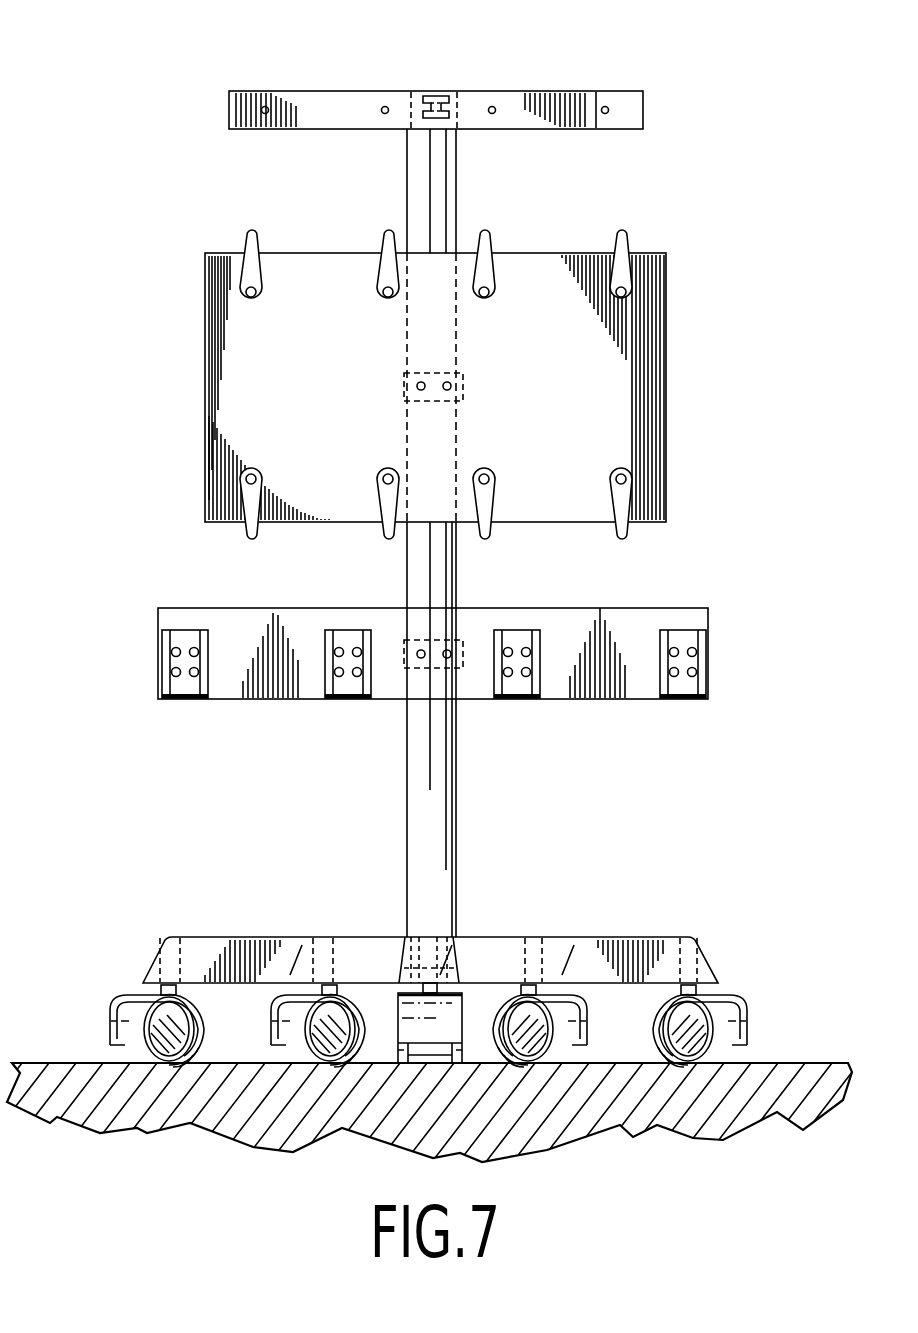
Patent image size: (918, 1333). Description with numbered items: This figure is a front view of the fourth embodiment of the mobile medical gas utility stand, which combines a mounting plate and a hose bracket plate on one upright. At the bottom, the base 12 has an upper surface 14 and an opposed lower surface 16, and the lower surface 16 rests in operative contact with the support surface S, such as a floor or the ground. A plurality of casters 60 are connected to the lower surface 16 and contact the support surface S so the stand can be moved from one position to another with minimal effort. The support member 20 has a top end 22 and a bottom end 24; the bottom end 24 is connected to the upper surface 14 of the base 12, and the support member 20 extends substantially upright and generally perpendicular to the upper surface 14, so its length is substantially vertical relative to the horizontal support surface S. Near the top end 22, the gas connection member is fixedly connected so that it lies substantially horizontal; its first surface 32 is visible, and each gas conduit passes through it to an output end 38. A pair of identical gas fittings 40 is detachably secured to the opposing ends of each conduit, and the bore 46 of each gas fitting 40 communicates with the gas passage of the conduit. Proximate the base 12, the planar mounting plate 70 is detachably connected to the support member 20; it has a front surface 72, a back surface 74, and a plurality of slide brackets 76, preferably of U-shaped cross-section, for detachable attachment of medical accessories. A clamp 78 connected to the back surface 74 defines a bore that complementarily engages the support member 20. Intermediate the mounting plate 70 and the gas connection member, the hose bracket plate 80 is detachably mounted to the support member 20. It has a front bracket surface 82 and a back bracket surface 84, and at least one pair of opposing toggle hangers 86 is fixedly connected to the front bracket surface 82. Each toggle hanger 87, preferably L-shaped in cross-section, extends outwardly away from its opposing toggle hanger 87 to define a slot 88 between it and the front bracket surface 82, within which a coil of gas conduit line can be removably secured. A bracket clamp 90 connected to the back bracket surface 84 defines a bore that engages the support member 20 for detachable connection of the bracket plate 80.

The base 12 is at (706, 938).
The upper surface 14 is at (608, 937).
The lower surface 16 is at (620, 984).
The support member 20 is at (458, 794).
The top end 22 is at (458, 131).
The bottom end 24 is at (457, 937).
The first surface 32 is at (229, 109).
The output end 38 is at (264, 107).
The gas fitting 40 is at (262, 110).
The bore 46 is at (267, 108).
The caster 60 is at (740, 1006).
The mounting plate 70 is at (710, 630).
The front surface 72 is at (280, 700).
The back surface 74 is at (160, 608).
The slide bracket 76 is at (180, 690).
The clamp 78 is at (462, 670).
The hose bracket plate 80 is at (668, 344).
The front bracket surface 82 is at (640, 386).
The back bracket surface 84 is at (668, 438).
The pair of opposing toggle hangers 86 is at (375, 268).
The toggle hanger 87 is at (252, 231).
The slot 88 is at (242, 244).
The bracket clamp 90 is at (403, 389).
The support surface S is at (805, 1063).